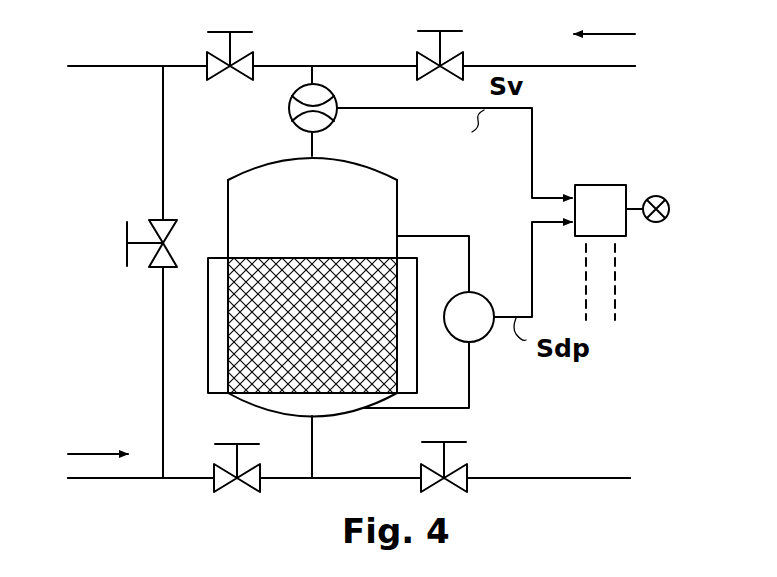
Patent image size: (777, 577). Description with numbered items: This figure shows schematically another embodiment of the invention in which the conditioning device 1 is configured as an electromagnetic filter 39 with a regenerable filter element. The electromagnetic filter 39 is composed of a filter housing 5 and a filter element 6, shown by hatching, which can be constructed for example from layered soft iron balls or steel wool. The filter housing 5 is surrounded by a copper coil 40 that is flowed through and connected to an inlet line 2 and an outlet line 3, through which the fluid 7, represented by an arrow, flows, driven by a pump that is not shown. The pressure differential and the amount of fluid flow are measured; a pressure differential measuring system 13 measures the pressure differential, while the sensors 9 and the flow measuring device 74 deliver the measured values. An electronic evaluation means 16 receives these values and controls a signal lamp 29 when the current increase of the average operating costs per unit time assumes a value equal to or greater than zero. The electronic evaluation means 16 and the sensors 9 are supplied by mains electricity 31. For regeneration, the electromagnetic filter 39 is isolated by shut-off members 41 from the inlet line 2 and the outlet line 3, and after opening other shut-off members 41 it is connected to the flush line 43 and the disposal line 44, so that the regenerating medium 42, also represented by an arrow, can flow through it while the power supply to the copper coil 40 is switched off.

The conditioning device 1 is at (356, 296).
The electromagnetic filter 39 is at (356, 296).
The inlet line 2 is at (86, 478).
The outlet line 3 is at (98, 68).
The filter housing 5 is at (360, 162).
The filter element 6 is at (234, 336).
The fluid 7 is at (96, 452).
The sensors 9 is at (379, 237).
The flow sensor 74 is at (290, 110).
The pressure differential measuring system 13 is at (484, 338).
The electronic evaluation means 16 is at (592, 184).
The signal lamp 29 is at (656, 196).
The mains electricity 31 is at (616, 280).
The copper coil 40 is at (214, 382).
The shut-off members 41 is at (205, 58).
The regenerating medium 42 is at (612, 36).
The flush line 43 is at (635, 67).
The disposal line 44 is at (588, 476).